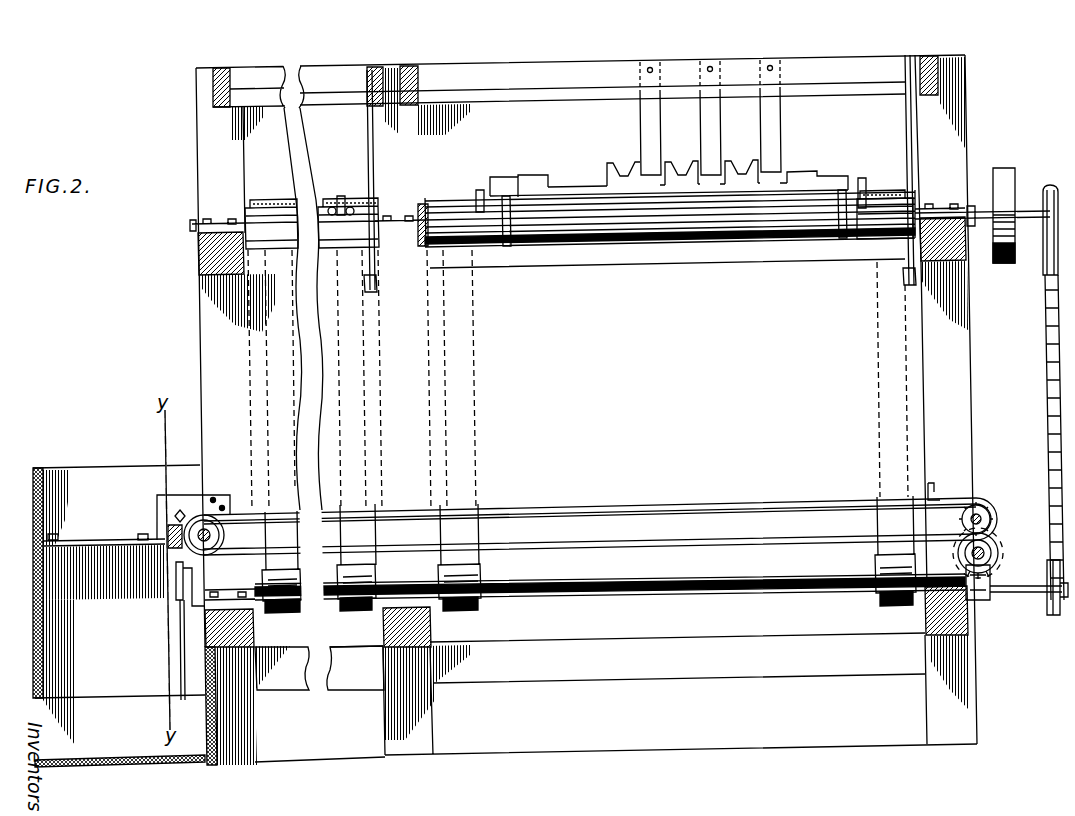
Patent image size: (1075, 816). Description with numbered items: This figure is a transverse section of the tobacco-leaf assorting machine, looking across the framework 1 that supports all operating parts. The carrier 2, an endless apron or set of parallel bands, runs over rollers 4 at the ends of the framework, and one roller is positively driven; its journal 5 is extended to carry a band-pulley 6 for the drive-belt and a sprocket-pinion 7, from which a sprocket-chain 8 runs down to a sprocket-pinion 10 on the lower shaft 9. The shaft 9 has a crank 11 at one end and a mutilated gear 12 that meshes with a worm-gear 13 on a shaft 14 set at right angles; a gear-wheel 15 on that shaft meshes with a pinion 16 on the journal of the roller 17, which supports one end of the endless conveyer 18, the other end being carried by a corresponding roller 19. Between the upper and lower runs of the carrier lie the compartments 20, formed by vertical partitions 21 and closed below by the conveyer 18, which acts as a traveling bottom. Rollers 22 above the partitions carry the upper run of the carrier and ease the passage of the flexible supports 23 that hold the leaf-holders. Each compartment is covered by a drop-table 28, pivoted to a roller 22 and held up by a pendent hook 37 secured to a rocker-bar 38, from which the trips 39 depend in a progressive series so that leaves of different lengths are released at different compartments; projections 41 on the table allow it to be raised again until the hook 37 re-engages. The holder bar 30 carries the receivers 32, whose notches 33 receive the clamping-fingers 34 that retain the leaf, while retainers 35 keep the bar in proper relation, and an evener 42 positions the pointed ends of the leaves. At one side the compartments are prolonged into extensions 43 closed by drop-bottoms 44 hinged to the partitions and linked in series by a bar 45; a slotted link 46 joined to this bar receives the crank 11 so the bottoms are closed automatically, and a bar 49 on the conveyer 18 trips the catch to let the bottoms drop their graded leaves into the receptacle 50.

The framework 1 is at (513, 410).
The carrier 2 is at (276, 200).
The rollers 4 is at (288, 590).
The journal 5 is at (982, 222).
The band-pulley 6 is at (1003, 170).
The sprocket-pinion 7 is at (1043, 242).
The sprocket-chain 8 is at (1048, 362).
The lower shaft 9 is at (707, 592).
The sprocket-pinion 10 is at (1050, 605).
The crank 11 is at (192, 580).
The mutilated gear 12 is at (980, 600).
The worm-gear 13 is at (1003, 553).
The shaft 14 is at (990, 542).
The gear-wheel 15 is at (1000, 571).
The pinion 16 is at (995, 510).
The roller 17 is at (962, 516).
The endless conveyer 18 is at (673, 518).
The roller 19 is at (220, 537).
The compartments 20 is at (578, 380).
The vertical partitions 21 is at (752, 270).
The rollers 22 is at (322, 242).
The flexible supports 23 is at (508, 232).
The drop-table 28 is at (328, 206).
The bar 30 is at (571, 188).
The receivers 32 is at (748, 170).
The notches 33 is at (675, 162).
The clamping-fingers 34 is at (632, 175).
The retainers 35 is at (540, 177).
The pendent hooks 37 is at (365, 151).
The rocker-bars 38 is at (535, 66).
The trips 39 is at (640, 130).
The projections 41 is at (336, 200).
The evener 42 is at (505, 177).
The extensions 43 is at (76, 507).
The drop-bottoms 44 is at (90, 545).
The bar 45 is at (165, 528).
The slotted link 46 is at (180, 636).
The bar 49 is at (180, 510).
The receptacle 50 is at (120, 740).